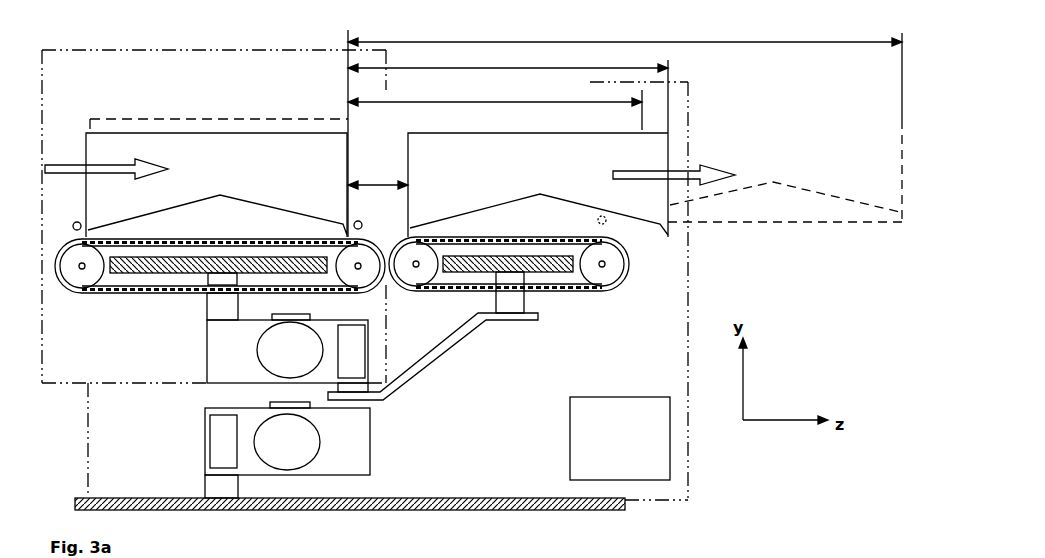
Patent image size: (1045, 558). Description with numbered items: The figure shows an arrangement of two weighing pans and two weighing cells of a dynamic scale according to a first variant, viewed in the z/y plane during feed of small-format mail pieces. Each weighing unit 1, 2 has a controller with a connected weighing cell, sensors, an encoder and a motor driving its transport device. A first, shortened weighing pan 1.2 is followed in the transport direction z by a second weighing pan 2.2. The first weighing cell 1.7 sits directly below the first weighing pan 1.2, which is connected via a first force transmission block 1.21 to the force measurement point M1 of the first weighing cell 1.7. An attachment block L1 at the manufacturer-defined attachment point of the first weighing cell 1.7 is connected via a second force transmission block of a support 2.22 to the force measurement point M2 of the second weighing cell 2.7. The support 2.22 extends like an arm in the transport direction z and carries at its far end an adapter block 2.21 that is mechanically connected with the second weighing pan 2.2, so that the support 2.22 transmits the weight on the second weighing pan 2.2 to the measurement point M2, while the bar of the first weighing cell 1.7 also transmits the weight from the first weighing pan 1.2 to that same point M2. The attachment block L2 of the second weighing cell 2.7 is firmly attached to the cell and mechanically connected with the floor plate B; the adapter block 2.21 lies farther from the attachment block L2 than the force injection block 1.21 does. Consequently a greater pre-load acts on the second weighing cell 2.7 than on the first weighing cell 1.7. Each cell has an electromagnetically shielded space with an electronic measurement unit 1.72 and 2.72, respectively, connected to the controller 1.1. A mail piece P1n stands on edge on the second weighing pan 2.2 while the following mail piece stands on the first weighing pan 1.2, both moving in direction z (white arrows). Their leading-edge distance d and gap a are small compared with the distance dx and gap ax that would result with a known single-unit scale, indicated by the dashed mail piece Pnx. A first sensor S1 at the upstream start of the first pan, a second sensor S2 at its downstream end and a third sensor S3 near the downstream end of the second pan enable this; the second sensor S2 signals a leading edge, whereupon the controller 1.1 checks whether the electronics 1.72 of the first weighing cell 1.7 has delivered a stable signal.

The weighing unit 1 is at (86, 50).
The weighing unit 2 is at (689, 453).
The controller 1.1 is at (618, 405).
The first weighing pan 1.2 is at (157, 273).
The first force transmission block 1.21 is at (230, 307).
The first weighing cell 1.7 is at (223, 360).
The electronic measurement unit 1.72 is at (358, 357).
The second weighing pan 2.2 is at (563, 292).
The adapter block 2.21 is at (512, 303).
The support 2.22 is at (457, 348).
The second weighing cell 2.7 is at (352, 447).
The electronic measurement unit 2.72 is at (216, 438).
The force measurement point M1 is at (225, 322).
The force measurement point M2 is at (356, 410).
The attachment block L1 is at (335, 390).
The attachment block L2 is at (215, 485).
The first sensor S1 is at (73, 226).
The second sensor S2 is at (378, 219).
The third sensor S3 is at (606, 224).
The floor plate B is at (553, 497).
The mail piece P1n is at (427, 148).
The mail piece (dashed, single-unit scale) Pnx is at (762, 132).
The distance a is at (377, 177).
The comparison distance ax is at (499, 90).
The distance d is at (525, 59).
The comparison distance dx is at (684, 26).